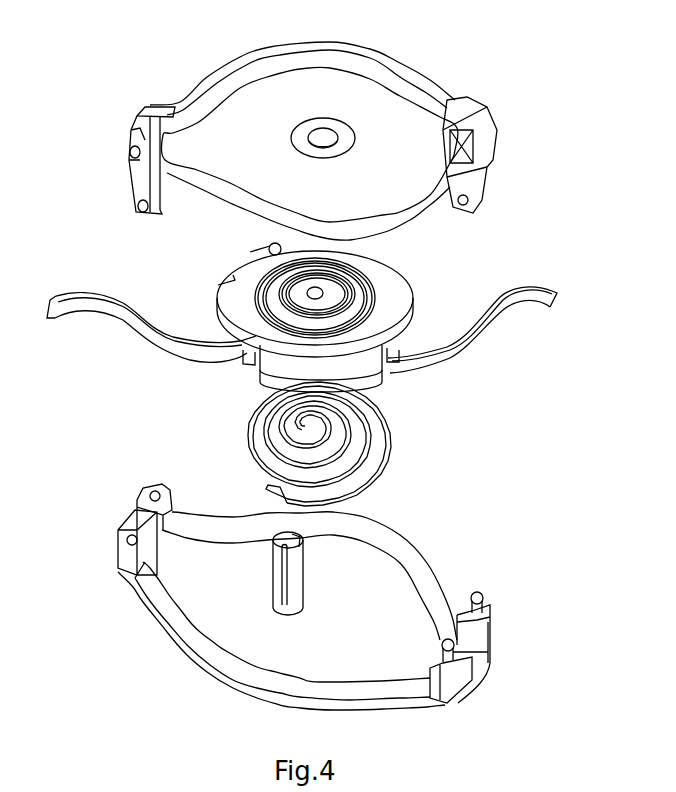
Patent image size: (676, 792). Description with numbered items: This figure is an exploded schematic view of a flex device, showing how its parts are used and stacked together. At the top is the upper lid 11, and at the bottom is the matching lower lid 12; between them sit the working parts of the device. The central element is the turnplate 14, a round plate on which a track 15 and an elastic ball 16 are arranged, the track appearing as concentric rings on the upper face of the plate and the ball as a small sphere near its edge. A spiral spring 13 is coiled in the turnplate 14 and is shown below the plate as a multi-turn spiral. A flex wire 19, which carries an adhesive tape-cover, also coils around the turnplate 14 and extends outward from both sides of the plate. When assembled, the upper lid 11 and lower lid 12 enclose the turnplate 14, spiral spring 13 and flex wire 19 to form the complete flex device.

The upper lid 11 is at (393, 62).
The lower lid 12 is at (400, 550).
The spiral spring 13 is at (393, 447).
The turnplate 14 is at (413, 298).
The track 15 is at (360, 305).
The elastic ball 16 is at (268, 247).
The flex wire 19 is at (490, 336).